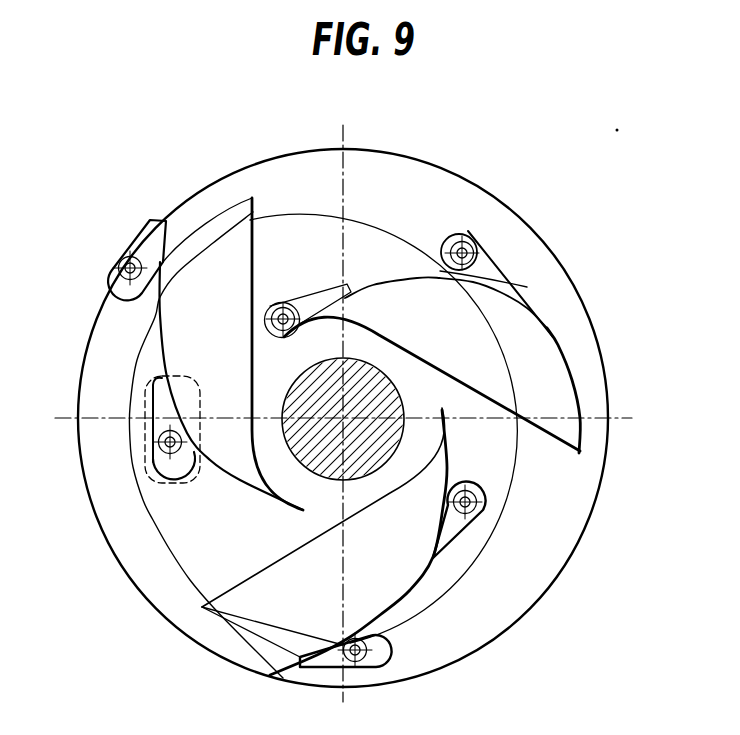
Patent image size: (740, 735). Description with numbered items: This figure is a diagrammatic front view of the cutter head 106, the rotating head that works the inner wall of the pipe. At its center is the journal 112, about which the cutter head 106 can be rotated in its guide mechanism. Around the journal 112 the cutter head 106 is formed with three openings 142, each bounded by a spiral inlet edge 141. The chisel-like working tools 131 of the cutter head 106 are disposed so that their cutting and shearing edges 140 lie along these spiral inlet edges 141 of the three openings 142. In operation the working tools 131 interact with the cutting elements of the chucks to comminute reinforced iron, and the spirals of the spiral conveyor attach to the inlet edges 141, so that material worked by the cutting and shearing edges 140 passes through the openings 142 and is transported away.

The cutter head 106 is at (111, 217).
The journal 112 is at (327, 483).
The chisel-like working tools 131 is at (488, 272).
The cutting and shearing edges 140 is at (525, 306).
The spiral inlet edges 141 is at (505, 284).
The openings 142 is at (317, 237).